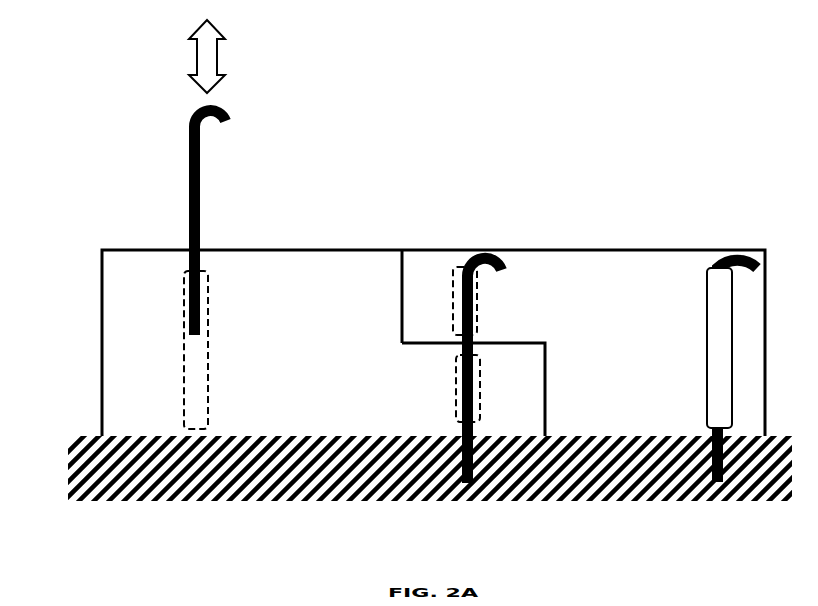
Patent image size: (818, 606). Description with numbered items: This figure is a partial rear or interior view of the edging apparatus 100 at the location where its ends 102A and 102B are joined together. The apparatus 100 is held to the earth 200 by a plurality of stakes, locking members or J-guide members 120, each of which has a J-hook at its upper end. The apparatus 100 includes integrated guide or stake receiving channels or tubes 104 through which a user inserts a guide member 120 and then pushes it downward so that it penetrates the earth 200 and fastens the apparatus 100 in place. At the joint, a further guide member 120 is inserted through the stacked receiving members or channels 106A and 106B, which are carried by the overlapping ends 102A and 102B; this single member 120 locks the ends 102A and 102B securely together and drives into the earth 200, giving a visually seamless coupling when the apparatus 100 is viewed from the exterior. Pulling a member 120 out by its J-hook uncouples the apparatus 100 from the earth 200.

The edging apparatus 100 is at (122, 276).
The first end of the edging apparatus 102A is at (513, 293).
The second end of the edging apparatus 102B is at (517, 400).
The guide receiving channel 104 is at (184, 378).
The upper guide receiving channel at the joined ends 106A is at (452, 300).
The lower guide receiving channel at the joined ends 106B is at (455, 390).
The J-guide member 120 is at (189, 178).
The earth 200 is at (147, 482).